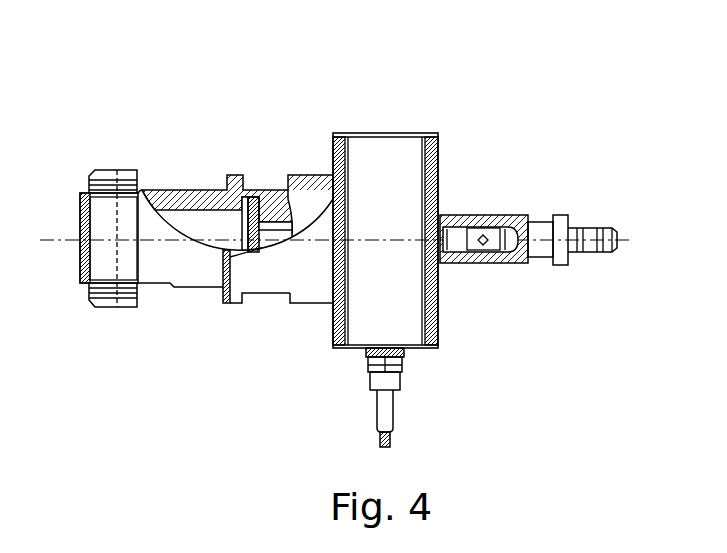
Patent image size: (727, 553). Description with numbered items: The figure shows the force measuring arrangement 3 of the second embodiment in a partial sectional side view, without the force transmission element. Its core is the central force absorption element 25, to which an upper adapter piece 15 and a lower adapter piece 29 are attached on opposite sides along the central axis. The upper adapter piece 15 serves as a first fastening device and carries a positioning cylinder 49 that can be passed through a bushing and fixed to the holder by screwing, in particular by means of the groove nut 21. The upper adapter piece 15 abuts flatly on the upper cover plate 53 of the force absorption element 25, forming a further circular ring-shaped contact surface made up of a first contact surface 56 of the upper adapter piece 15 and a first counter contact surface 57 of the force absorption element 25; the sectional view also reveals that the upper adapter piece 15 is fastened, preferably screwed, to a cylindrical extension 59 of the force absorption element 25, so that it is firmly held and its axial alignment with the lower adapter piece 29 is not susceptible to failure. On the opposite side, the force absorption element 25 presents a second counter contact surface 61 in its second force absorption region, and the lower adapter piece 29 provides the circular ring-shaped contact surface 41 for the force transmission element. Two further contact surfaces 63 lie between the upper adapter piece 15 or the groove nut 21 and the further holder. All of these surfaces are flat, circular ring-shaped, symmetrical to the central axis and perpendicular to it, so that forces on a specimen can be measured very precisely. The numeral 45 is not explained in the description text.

The force measuring arrangement 3 is at (538, 99).
The upper adapter piece 15 is at (283, 280).
The groove nut 21 is at (103, 260).
The force absorption element 25 is at (388, 184).
The lower adapter piece 29 is at (540, 247).
The circular ring-shaped contact surface 41 is at (565, 217).
The threaded end 45 is at (583, 258).
The positioning cylinder 49 is at (197, 268).
The upper cover plate 53 is at (330, 301).
The first contact surface 56 is at (354, 177).
The first counter contact surface 57 is at (321, 178).
The cylindrical extension 59 is at (270, 205).
The second counter contact surface 61 is at (458, 213).
The further contact surfaces 63 is at (148, 187).